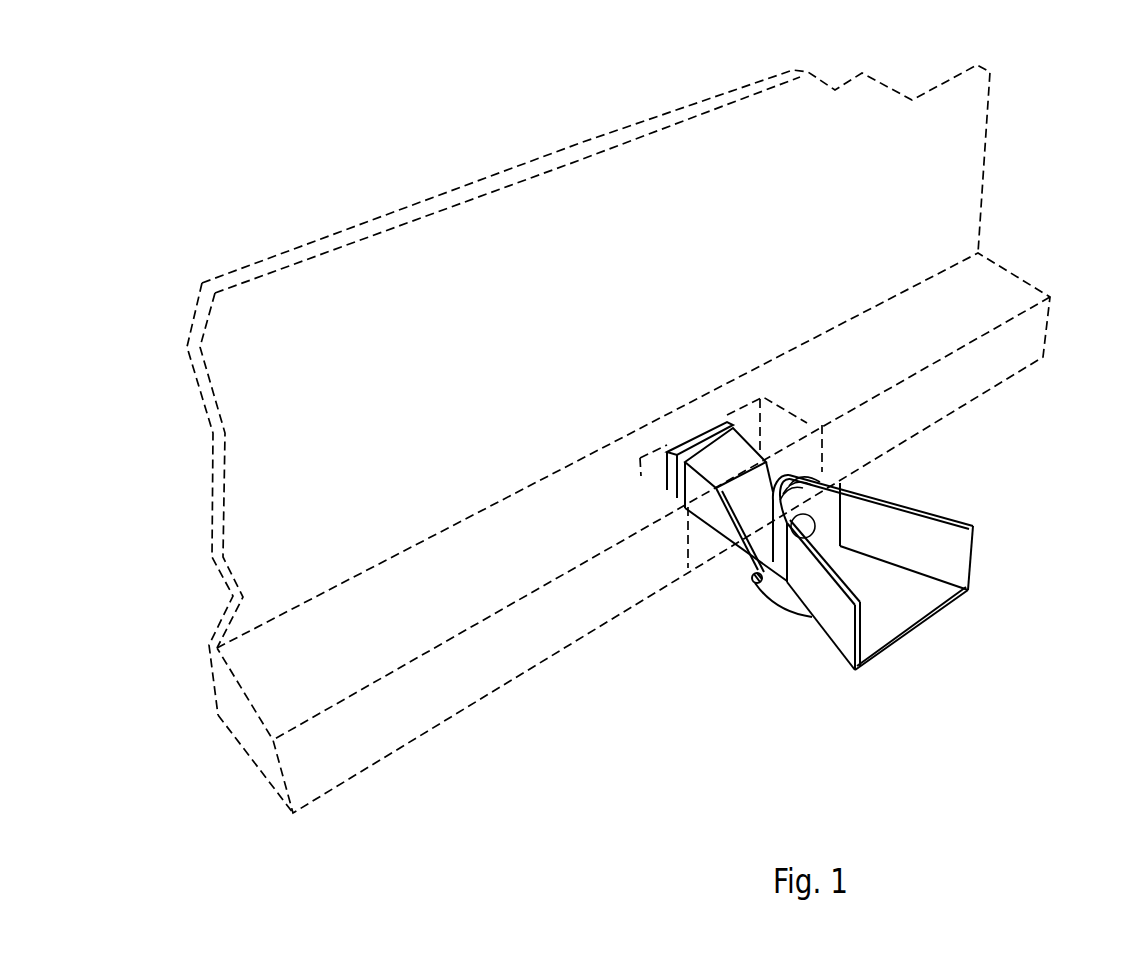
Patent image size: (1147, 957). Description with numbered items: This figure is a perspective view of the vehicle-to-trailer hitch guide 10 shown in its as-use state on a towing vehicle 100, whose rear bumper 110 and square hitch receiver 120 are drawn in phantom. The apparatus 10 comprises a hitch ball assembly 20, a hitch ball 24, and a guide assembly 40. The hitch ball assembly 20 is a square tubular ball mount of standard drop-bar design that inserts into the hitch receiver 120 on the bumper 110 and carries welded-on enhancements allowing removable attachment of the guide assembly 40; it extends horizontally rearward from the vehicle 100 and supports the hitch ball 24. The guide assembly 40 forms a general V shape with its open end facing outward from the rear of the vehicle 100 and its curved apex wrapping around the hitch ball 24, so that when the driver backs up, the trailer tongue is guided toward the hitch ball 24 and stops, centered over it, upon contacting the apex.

The vehicle-to-trailer hitch guide 10 is at (879, 588).
The hitch ball assembly 20 is at (718, 544).
The hitch ball 24 is at (808, 528).
The guide assembly 40 is at (952, 540).
The towing vehicle 100 is at (985, 150).
The vehicle bumper 110 is at (1013, 287).
The hitch receiver 120 is at (697, 440).